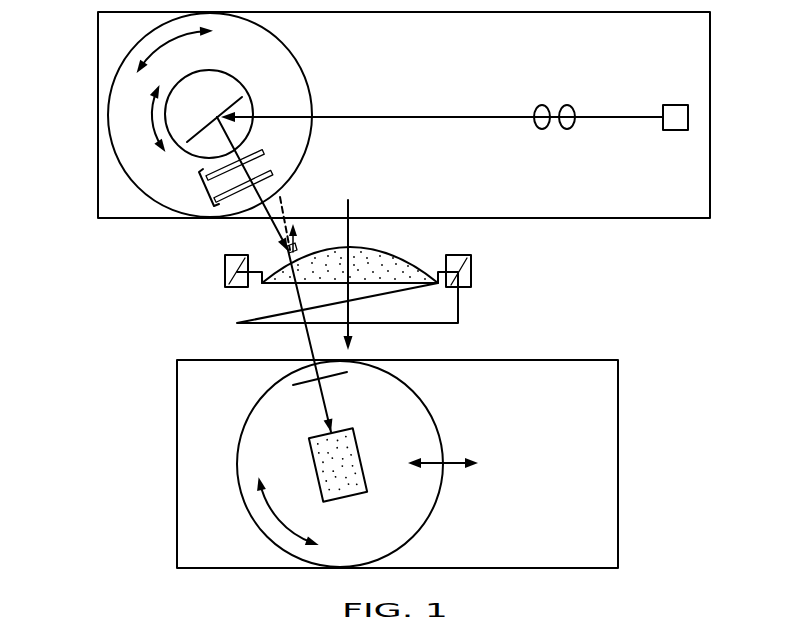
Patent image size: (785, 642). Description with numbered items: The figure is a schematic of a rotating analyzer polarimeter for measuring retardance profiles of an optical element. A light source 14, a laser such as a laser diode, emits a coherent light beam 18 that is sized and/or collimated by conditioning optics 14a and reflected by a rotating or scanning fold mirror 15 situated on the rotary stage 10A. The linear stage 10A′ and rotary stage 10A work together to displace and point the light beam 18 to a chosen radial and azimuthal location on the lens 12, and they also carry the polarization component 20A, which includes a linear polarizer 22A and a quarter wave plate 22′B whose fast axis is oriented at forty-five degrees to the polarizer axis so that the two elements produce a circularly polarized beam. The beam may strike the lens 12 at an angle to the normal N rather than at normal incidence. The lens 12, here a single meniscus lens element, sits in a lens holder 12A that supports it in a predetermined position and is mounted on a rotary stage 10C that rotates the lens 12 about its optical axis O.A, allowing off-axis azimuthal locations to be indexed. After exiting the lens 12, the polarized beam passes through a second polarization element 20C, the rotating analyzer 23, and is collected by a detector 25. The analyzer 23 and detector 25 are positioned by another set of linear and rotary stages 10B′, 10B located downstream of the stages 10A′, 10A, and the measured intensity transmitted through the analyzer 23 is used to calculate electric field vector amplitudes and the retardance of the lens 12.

The linear stage 10A′ is at (98, 48).
The rotary stage 10A is at (307, 80).
The fold mirror 15 is at (240, 100).
The linear polarizer 22A is at (253, 157).
The quarter wave plate 22′B is at (274, 178).
The polarization component 20A is at (236, 164).
The light beam 18 is at (626, 100).
The light source 14 is at (673, 105).
The conditioning optics 14a is at (542, 129).
The normal N is at (290, 223).
The optical axis O.A is at (349, 210).
The lens 12 is at (431, 263).
The lens holder 12A is at (226, 308).
The rotary stage 10C is at (225, 270).
The linear stage 10B′ is at (618, 415).
The rotary stage 10B is at (440, 445).
The rotating analyzer 23 is at (310, 445).
The second polarization element 20C is at (338, 464).
The detector 25 is at (317, 472).